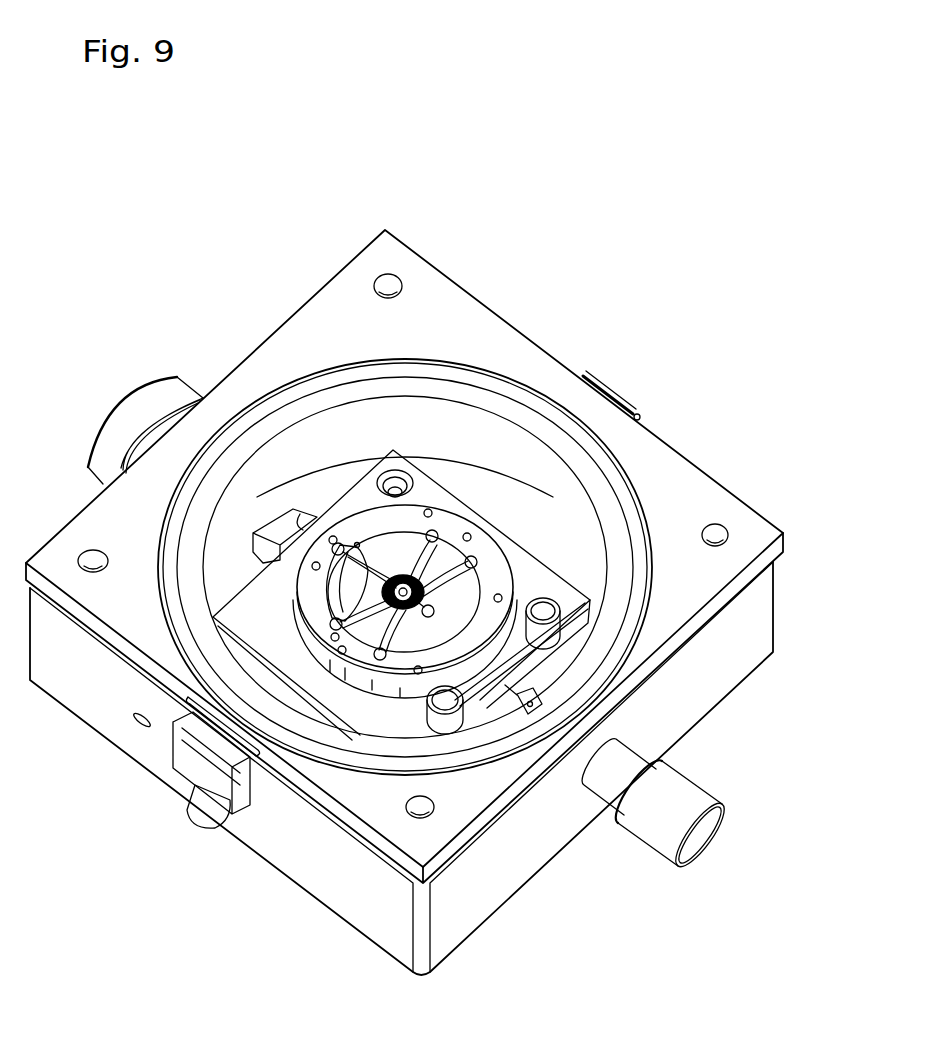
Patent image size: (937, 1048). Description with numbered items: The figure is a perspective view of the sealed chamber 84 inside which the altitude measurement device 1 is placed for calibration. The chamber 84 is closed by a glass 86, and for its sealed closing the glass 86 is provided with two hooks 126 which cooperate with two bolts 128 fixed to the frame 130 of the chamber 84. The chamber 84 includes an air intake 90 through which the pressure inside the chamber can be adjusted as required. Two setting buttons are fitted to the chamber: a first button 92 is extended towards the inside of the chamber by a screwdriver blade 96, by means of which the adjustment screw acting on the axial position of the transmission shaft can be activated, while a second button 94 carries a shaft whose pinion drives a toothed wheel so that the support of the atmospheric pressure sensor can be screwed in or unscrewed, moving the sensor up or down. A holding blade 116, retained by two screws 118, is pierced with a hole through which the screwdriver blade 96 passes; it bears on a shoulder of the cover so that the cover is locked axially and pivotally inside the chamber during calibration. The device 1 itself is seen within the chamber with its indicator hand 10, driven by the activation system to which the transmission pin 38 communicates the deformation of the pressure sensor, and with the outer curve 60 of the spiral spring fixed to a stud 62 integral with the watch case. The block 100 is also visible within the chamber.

The altitude measurement device 1 is at (445, 580).
The indicator hand 10 is at (506, 512).
The transmission pin 38 is at (343, 593).
The outer curve 60 is at (425, 590).
The stud 62 is at (434, 610).
The sealed chamber 84 is at (426, 584).
The glass 86 is at (339, 330).
The air intake 90 is at (137, 718).
The first button 92 is at (697, 795).
The second button 94 is at (146, 407).
The screwdriver blade 96 is at (517, 700).
The block 100 is at (277, 533).
The holding blade 116 is at (468, 690).
The screws 118 is at (548, 610).
The hooks 126 is at (608, 380).
The bolts 128 is at (640, 416).
The frame 130 is at (762, 631).